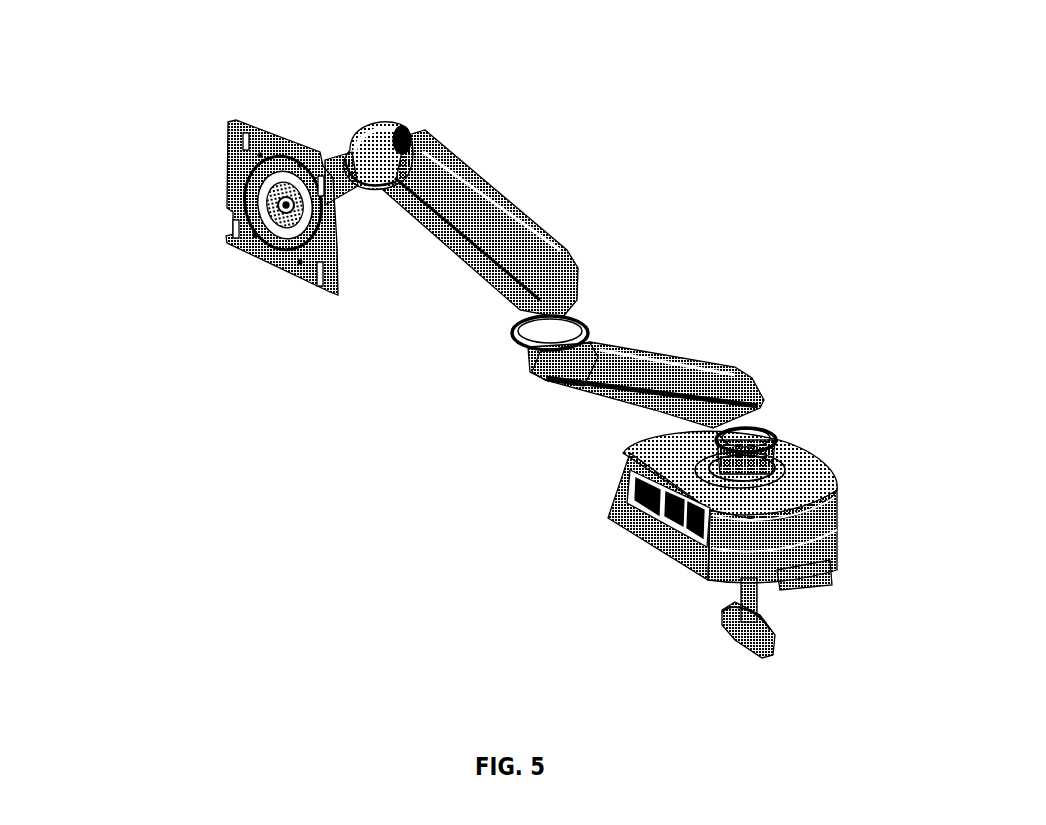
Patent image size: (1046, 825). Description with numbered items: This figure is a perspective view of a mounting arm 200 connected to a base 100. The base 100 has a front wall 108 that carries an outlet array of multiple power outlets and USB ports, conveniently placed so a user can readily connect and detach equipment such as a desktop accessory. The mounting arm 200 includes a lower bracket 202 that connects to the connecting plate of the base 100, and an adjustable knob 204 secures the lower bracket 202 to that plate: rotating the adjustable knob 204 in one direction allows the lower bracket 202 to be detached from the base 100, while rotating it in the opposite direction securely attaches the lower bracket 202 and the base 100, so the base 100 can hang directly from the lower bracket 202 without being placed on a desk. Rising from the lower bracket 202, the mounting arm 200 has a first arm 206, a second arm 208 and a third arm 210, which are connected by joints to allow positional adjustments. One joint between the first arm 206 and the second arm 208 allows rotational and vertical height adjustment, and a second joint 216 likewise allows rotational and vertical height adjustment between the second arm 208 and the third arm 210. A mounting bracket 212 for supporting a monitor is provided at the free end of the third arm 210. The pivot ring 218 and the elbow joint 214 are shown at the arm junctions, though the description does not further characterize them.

The base 100 is at (575, 495).
The front wall 108 is at (610, 528).
The mounting arm 200 is at (573, 135).
The lower bracket 202 is at (800, 577).
The adjustable knob 204 is at (738, 645).
The first arm 206 is at (702, 365).
The second arm 208 is at (455, 263).
The third arm 210 is at (350, 125).
The mounting bracket 212 is at (213, 138).
The elbow joint 214 is at (540, 375).
The second joint 216 is at (398, 124).
The pivot ring 218 is at (593, 337).